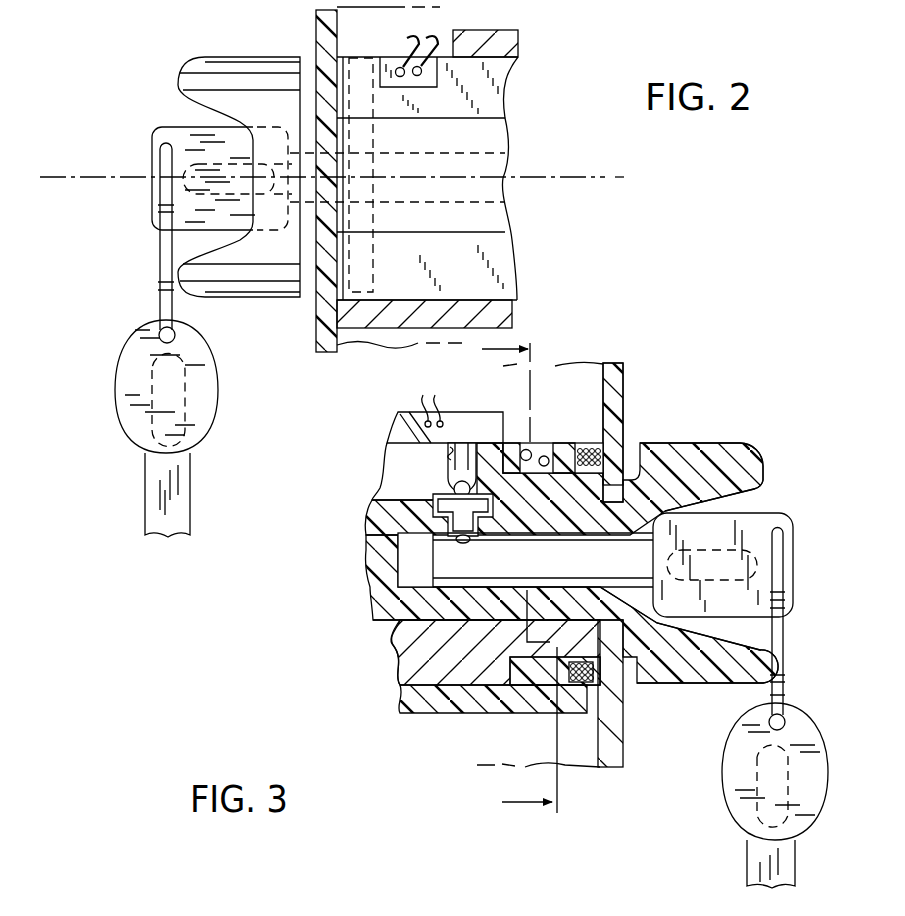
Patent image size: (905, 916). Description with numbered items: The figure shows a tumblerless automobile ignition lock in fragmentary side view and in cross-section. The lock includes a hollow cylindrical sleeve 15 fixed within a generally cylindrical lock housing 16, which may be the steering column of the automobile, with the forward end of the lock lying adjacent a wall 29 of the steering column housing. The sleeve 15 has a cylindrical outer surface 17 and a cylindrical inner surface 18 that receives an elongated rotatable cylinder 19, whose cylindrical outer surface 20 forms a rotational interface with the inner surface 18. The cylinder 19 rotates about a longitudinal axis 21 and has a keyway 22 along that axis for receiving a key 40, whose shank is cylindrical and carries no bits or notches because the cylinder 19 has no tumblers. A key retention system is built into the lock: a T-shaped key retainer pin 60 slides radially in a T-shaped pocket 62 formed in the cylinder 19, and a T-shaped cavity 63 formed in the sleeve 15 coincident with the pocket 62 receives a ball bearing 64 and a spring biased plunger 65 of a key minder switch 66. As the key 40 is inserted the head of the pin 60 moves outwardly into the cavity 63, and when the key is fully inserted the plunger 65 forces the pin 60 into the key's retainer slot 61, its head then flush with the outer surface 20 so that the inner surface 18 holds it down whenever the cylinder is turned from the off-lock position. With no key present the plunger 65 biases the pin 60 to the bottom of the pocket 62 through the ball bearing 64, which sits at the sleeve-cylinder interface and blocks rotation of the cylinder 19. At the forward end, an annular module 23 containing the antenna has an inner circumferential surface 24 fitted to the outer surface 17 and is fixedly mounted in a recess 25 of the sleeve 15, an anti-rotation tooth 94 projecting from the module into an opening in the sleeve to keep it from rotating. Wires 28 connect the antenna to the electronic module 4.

In FIG. 3, the module 4 is at (529, 574).
In FIG. 2, the hollow cylindrical sleeve 15 is at (495, 110).
In FIG. 3, the hollow cylindrical sleeve 15 is at (405, 675).
In FIG. 2, the lock housing 16 is at (495, 33).
In FIG. 3, the lock housing 16 is at (405, 427).
In FIG. 2, the cylindrical outer surface 17 is at (500, 330).
In FIG. 3, the cylindrical outer surface 17 is at (412, 716).
In FIG. 2, the cylindrical inner surface 18 is at (483, 120).
In FIG. 3, the cylindrical inner surface 18 is at (372, 617).
In FIG. 2, the rotatable cylinder 19 is at (490, 222).
In FIG. 3, the rotatable cylinder 19 is at (368, 582).
In FIG. 3, the cylindrical outer surface 20 is at (400, 665).
In FIG. 2, the longitudinal axis 21 is at (655, 176).
In FIG. 3, the keyway 22 is at (652, 610).
In FIG. 2, the annular module 23 is at (362, 270).
In FIG. 3, the annular module 23 is at (555, 445).
In FIG. 3, the inner circumferential surface 24 is at (607, 485).
In FIG. 3, the recess 25 is at (516, 442).
In FIG. 2, the wires 28 is at (417, 38).
In FIG. 2, the wall 29 is at (322, 28).
In FIG. 3, the wall 29 is at (620, 385).
In FIG. 2, the key 40 is at (153, 133).
In FIG. 3, the key 40 is at (787, 513).
In FIG. 3, the key retainer pin 60 is at (447, 507).
In FIG. 3, the retainer slot 61 is at (467, 543).
In FIG. 3, the T-shaped pocket 62 is at (485, 507).
In FIG. 3, the T-shaped cavity 63 is at (448, 455).
In FIG. 3, the ball bearing 64 is at (450, 508).
In FIG. 3, the spring biased plunger 65 is at (450, 472).
In FIG. 3, the key minder switch 66 is at (470, 423).
In FIG. 3, the anti-rotation tooth 94 is at (541, 680).